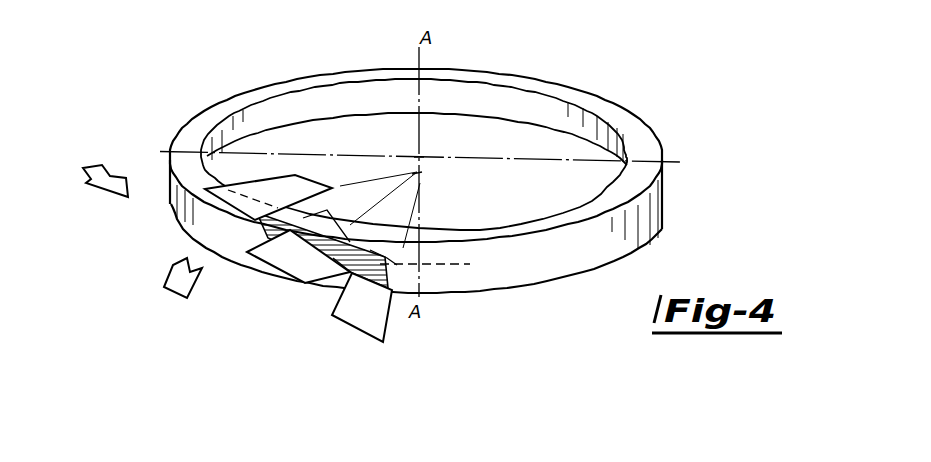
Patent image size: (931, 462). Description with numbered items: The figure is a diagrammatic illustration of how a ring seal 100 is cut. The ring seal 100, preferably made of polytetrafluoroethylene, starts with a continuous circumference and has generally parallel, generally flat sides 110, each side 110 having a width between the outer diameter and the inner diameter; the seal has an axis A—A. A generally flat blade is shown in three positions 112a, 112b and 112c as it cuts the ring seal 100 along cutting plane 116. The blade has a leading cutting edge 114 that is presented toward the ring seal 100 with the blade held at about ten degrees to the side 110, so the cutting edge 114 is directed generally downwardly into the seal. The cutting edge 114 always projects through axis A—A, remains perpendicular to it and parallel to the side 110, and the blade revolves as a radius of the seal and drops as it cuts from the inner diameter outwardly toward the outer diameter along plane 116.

The ring seal 100 is at (438, 162).
The side 110 is at (576, 100).
The blade (first position) 112a is at (250, 183).
The blade (second position) 112b is at (264, 268).
The blade (third position) 112c is at (365, 338).
The cutting edge 114 is at (305, 188).
The cutting plane 116 is at (340, 258).